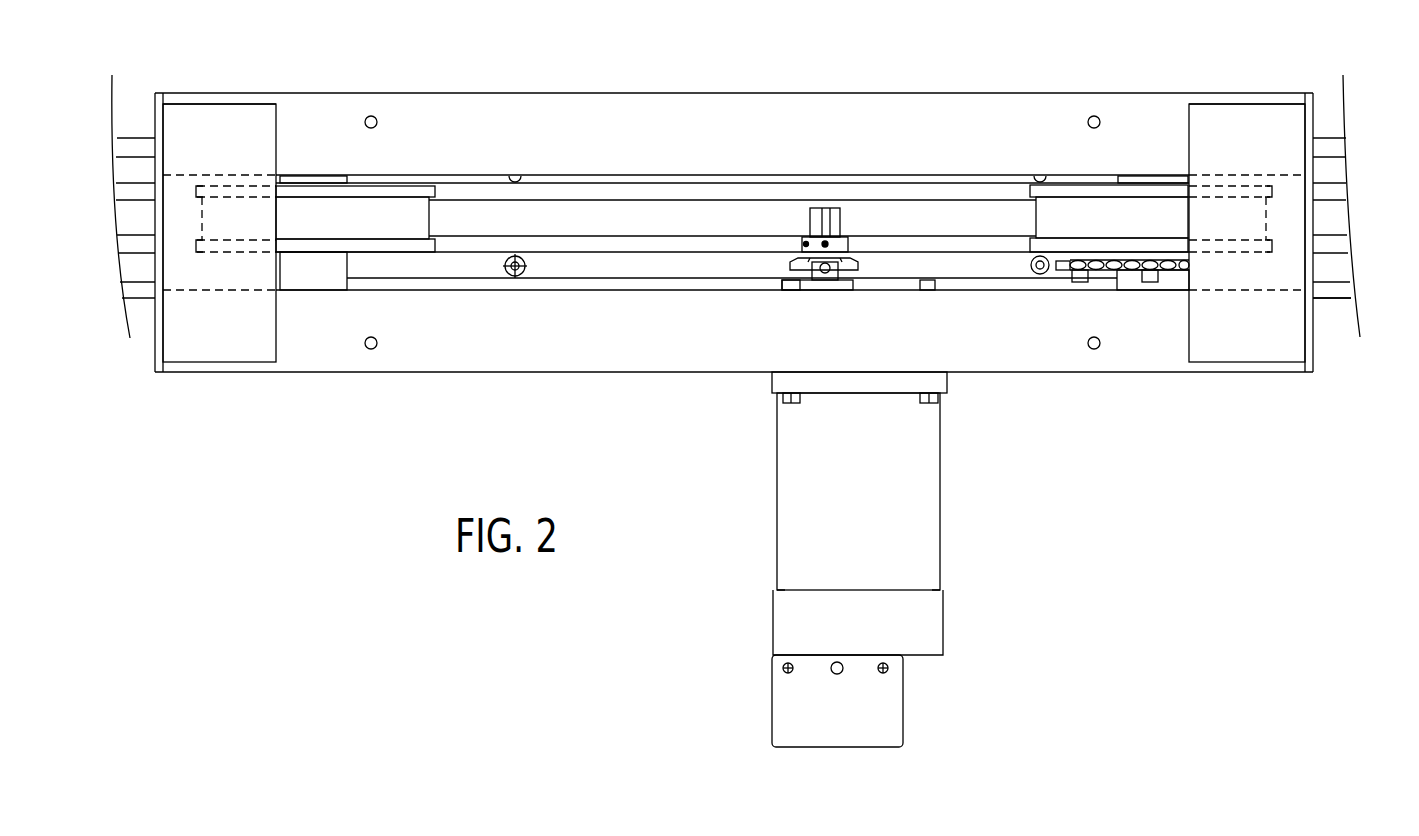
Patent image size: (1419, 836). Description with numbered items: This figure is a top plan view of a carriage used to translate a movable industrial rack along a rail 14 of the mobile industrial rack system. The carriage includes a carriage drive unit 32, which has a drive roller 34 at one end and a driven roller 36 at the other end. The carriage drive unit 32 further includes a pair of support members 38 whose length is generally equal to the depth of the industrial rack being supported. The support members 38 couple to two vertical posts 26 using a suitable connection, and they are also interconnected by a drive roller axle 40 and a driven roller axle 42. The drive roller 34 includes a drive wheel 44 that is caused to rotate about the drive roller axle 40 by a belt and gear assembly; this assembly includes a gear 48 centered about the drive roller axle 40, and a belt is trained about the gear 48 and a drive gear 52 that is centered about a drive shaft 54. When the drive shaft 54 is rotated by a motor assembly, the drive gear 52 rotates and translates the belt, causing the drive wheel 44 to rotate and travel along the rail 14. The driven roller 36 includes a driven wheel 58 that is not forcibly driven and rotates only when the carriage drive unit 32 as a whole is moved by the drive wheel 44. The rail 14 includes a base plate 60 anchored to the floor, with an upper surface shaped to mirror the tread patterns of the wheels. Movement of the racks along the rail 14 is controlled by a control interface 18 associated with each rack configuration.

The rail 14 is at (1335, 133).
The control interface 18 is at (880, 521).
The vertical posts 26 is at (230, 350).
The carriage drive unit 32 is at (1270, 36).
The drive roller 34 is at (1171, 108).
The driven roller 36 is at (326, 103).
The support members 38 is at (833, 93).
The drive roller axle 40 is at (1158, 178).
The driven roller axle 42 is at (300, 290).
The drive wheel 44 is at (1067, 203).
The gear 48 is at (1140, 262).
The drive gear 52 is at (830, 271).
The drive shaft 54 is at (834, 223).
The driven wheel 58 is at (385, 200).
The base plate 60 is at (1335, 300).